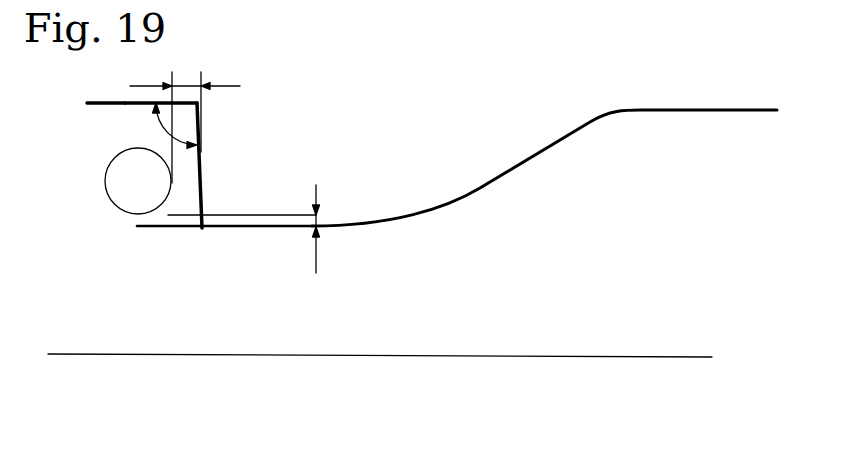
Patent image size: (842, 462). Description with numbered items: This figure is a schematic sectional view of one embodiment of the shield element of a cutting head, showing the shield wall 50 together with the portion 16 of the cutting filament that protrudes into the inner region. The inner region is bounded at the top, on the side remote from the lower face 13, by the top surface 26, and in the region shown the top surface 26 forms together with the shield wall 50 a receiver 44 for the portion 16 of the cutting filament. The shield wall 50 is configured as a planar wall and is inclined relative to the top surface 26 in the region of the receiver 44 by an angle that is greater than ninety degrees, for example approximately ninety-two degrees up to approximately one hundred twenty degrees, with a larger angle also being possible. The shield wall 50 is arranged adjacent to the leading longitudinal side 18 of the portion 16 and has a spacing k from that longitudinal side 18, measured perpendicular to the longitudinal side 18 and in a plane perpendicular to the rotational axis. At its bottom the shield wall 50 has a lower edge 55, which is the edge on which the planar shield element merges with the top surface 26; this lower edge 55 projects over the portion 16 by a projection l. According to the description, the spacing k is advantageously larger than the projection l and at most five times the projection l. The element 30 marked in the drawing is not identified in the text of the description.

The lower face 13 is at (592, 357).
The portion of the cutting filament 16 is at (118, 197).
The leading longitudinal side 18 is at (172, 182).
The top surface 26 is at (103, 107).
The curved side wall 30 is at (483, 190).
The receiver 44 is at (133, 118).
The shield wall 50 is at (197, 190).
The lower edge 55 is at (202, 228).
The spacing k is at (185, 77).
The projection l is at (317, 222).